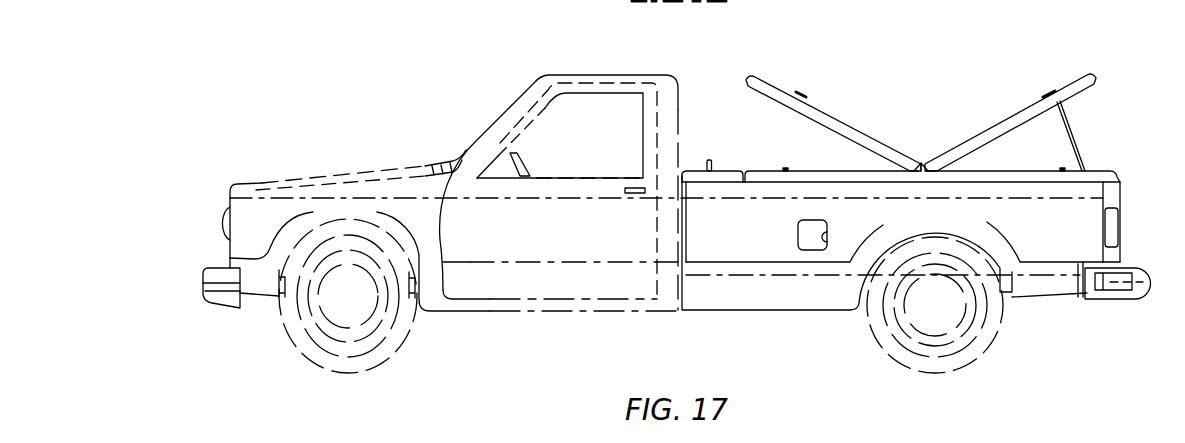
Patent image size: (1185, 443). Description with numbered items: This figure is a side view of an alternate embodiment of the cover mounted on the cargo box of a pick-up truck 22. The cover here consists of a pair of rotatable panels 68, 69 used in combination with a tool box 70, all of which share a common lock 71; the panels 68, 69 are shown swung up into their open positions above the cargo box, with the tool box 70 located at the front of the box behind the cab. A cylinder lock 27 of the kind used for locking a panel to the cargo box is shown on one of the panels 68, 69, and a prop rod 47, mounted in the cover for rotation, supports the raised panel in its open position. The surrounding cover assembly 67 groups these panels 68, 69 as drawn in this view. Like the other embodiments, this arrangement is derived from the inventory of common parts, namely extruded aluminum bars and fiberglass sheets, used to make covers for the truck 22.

The pick-up truck 22 is at (600, 311).
The cover assembly 67 is at (921, 85).
The rotatable panel 68 is at (863, 137).
The rotatable panel 69 is at (1010, 118).
The tool box 70 is at (716, 164).
The common lock 71 is at (800, 92).
The cylinder lock 27 is at (1050, 89).
The prop rod 47 is at (1075, 134).